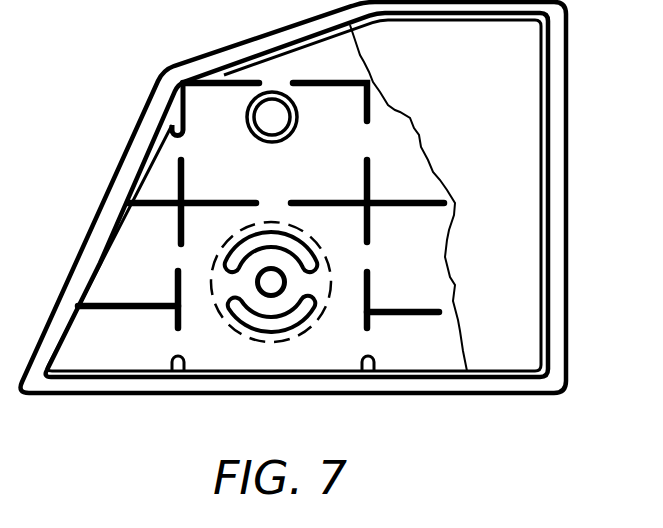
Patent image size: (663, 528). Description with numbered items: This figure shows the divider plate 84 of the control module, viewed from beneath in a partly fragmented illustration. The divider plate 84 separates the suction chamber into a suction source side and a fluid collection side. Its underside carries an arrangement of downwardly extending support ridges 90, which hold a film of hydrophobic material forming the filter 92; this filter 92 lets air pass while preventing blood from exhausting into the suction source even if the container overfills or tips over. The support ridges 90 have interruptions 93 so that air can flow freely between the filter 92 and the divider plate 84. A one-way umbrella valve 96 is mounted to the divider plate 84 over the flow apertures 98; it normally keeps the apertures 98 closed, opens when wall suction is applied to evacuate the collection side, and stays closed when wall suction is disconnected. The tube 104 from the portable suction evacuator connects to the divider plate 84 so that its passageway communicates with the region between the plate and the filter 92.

The divider plate 84 is at (388, 338).
The support ridges 90 is at (334, 87).
The hydrophobic filter 92 is at (448, 84).
The interruptions 93 is at (376, 140).
The umbrella valve 96 is at (312, 323).
The flow apertures 98 is at (232, 265).
The tube 104 is at (247, 112).